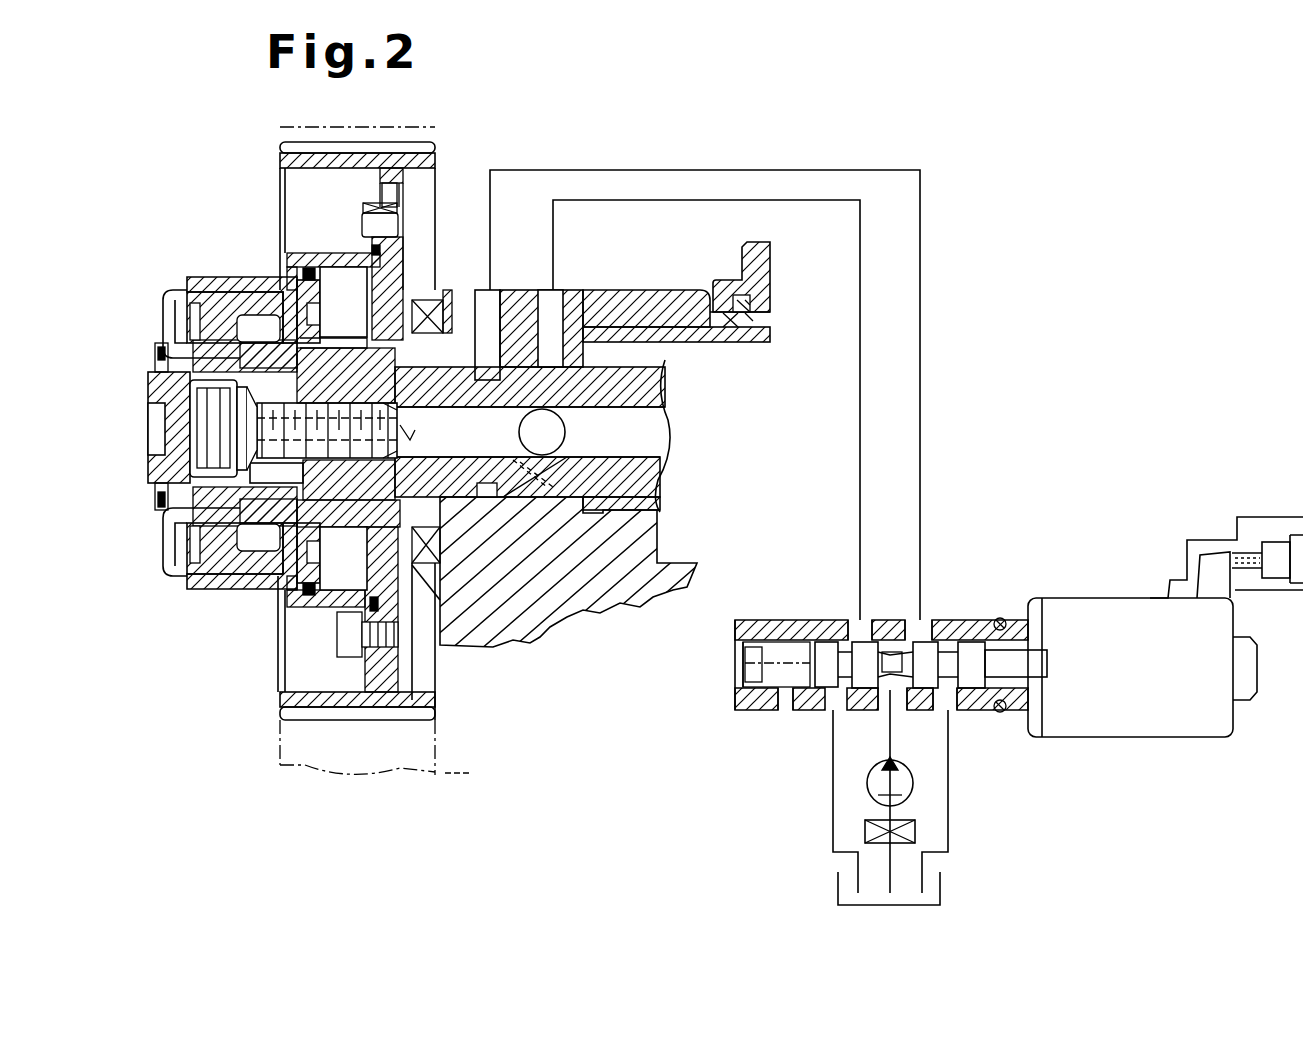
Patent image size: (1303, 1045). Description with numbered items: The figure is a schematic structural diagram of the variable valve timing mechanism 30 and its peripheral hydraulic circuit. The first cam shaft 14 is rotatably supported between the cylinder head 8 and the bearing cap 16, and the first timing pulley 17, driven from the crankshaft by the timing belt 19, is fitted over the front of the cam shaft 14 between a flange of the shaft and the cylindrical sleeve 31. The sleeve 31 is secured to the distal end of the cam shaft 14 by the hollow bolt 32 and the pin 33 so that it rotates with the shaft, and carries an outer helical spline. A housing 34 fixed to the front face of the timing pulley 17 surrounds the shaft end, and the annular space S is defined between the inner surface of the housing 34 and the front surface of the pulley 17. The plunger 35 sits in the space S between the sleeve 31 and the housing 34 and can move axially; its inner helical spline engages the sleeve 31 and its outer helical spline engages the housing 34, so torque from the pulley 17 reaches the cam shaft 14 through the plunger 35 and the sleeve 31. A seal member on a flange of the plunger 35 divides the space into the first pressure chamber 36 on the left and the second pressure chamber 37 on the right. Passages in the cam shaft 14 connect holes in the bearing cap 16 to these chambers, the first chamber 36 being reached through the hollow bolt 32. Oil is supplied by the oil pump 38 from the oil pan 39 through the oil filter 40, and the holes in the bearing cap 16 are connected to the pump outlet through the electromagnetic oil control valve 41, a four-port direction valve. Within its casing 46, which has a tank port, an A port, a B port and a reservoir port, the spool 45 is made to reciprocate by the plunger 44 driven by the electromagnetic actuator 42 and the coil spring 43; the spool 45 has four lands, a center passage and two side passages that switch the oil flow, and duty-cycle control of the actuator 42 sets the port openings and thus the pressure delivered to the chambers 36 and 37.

The cylinder head 8 is at (540, 635).
The first cam shaft 14 is at (667, 387).
The bearing cap 16 is at (753, 333).
The first timing pulley 17 is at (280, 192).
The timing belt 19 is at (470, 773).
The variable valve timing mechanism 30 is at (127, 602).
The cylindrical sleeve 31 is at (190, 510).
The hollow bolt 32 is at (150, 388).
The pin 33 is at (293, 470).
The housing 34 is at (205, 275).
The plunger 35 is at (200, 305).
The first pressure chamber 36 is at (183, 285).
The second pressure chamber 37 is at (360, 314).
The oil pump 38 is at (913, 780).
The oil pan 39 is at (940, 886).
The oil filter 40 is at (915, 833).
The electromagnetic oil control valve 41 is at (1192, 693).
The electromagnetic actuator 42 is at (1163, 762).
The coil spring 43 is at (735, 698).
The plunger 44 is at (1027, 680).
The spool 45 is at (812, 655).
The casing 46 is at (750, 620).
The annular space S is at (347, 277).